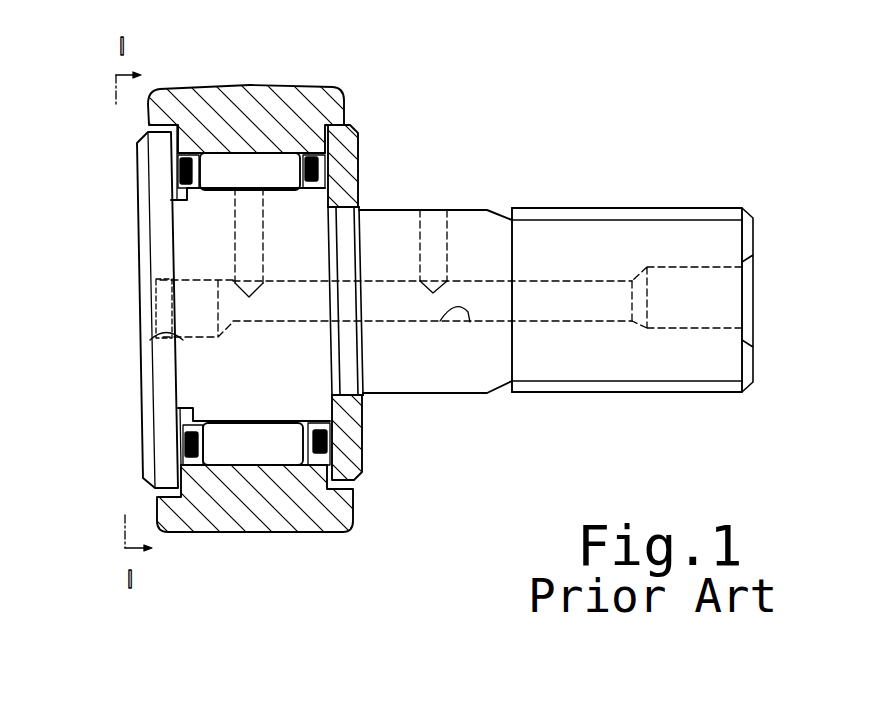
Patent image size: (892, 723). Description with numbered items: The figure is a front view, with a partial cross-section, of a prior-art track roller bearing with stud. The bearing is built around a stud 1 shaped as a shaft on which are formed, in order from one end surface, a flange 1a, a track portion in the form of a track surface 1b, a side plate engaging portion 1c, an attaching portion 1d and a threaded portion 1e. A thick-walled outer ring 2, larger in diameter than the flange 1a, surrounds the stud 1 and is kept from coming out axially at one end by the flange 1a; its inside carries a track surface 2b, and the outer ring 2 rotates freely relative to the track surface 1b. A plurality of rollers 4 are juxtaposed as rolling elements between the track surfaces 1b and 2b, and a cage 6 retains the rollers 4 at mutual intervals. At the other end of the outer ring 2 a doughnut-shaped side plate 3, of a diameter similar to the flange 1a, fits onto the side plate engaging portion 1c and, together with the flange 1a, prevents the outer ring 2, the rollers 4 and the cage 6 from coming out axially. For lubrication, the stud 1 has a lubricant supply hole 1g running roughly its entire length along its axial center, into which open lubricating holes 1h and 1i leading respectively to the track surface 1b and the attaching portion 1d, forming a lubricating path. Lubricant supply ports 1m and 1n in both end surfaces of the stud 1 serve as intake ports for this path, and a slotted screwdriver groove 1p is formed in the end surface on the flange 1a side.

The stud 1 is at (578, 200).
The flange 1a is at (158, 188).
The track surface 1b is at (280, 188).
The side plate engaging portion 1c is at (345, 235).
The attaching portion 1d is at (470, 227).
The threaded portion 1e is at (657, 213).
The lubricant supply hole 1g is at (470, 322).
The lubricating hole 1h is at (235, 243).
The lubricating hole 1i is at (445, 243).
The lubricant supply port 1m is at (150, 335).
The lubricant supply port 1n is at (707, 327).
The slotted screwdriver groove 1p is at (153, 323).
The outer ring 2 is at (278, 300).
The track surface 2b is at (223, 157).
The side plate 3 is at (348, 177).
The rollers 4 is at (247, 167).
The cage 6 is at (213, 528).